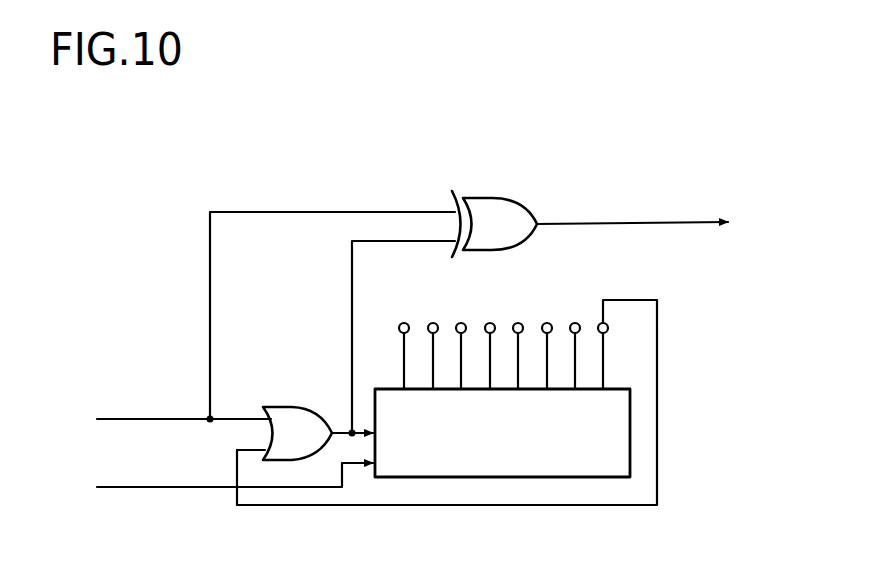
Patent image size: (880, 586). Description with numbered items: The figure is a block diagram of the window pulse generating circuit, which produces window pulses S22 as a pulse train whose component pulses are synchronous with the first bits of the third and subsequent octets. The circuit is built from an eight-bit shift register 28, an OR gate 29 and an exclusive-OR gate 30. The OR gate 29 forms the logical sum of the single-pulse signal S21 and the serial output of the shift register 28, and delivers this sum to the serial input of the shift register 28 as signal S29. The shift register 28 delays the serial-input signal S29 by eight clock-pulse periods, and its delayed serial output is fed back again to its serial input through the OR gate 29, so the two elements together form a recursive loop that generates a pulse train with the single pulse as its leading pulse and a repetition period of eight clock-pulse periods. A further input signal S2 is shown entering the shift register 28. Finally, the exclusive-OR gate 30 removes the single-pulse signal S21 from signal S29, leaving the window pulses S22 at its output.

The shift register 28 is at (430, 478).
The OR gate 29 is at (276, 407).
The exclusive-OR gate 30 is at (492, 198).
The single-pulse signal S21 is at (243, 322).
The input signal S2 is at (202, 480).
The signal S29 is at (338, 431).
The window pulses S22 is at (666, 222).